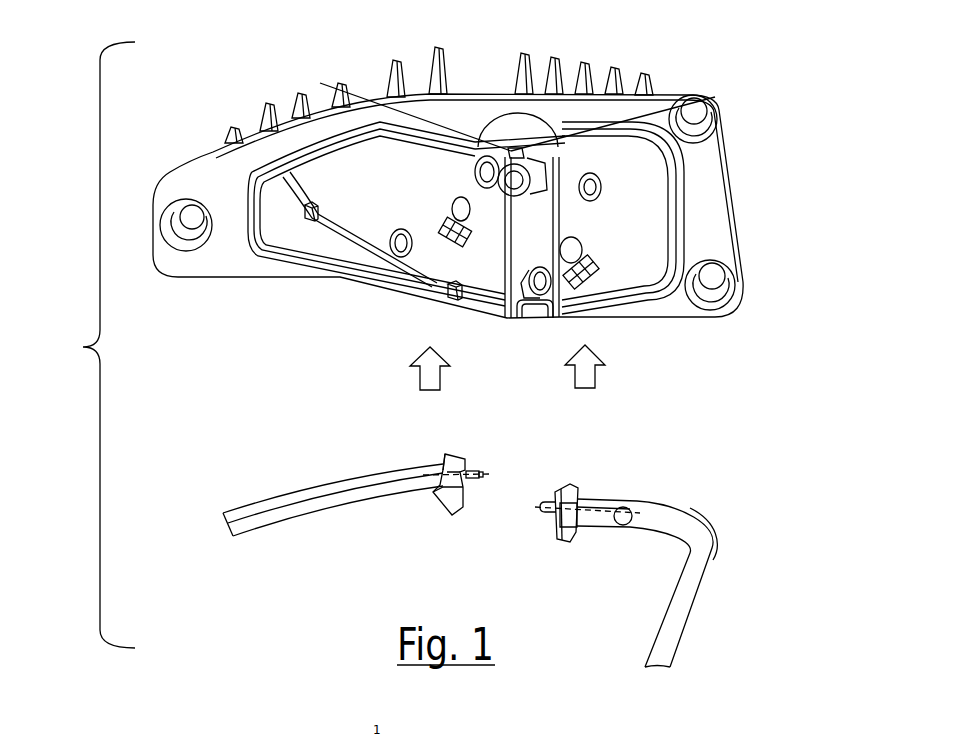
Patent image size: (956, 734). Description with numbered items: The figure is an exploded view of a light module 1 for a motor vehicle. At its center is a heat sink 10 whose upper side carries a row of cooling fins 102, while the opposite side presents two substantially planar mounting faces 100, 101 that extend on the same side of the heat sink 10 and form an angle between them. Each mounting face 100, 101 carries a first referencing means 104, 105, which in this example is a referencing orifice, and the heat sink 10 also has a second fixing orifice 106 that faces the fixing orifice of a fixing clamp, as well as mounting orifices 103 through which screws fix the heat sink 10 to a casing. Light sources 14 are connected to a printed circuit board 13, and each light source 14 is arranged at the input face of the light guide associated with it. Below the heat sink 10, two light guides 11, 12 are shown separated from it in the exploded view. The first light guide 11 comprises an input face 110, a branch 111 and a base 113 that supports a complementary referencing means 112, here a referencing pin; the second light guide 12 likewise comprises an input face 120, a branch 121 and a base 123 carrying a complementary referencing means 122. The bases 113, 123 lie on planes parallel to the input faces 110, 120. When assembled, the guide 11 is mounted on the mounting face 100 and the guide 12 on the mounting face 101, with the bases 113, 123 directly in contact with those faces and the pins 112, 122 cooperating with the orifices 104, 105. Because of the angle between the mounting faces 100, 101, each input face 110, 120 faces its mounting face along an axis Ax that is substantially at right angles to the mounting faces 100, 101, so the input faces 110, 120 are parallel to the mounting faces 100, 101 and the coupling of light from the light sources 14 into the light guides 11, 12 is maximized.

The light module 1 is at (83, 347).
The heat sink 10 is at (262, 80).
The mounting face 100 is at (360, 203).
The mounting face 101 is at (640, 209).
The cooling fins 102 is at (645, 73).
The mounting orifices 103 is at (695, 113).
The first referencing means 104 is at (458, 199).
The first referencing means 105 is at (582, 246).
The second fixing orifice 106 is at (518, 180).
The light guide 11 is at (352, 476).
The input face 110 is at (450, 503).
The branch 111 is at (272, 508).
The complementary referencing means 112 is at (473, 468).
The base 113 is at (437, 497).
The light guide 12 is at (638, 539).
The input face 120 is at (558, 523).
The branch 121 is at (707, 533).
The complementary referencing means 122 is at (553, 495).
The base 123 is at (562, 541).
The printed circuit board 13 is at (440, 236).
The light sources 14 is at (464, 243).
The axis Ax is at (514, 471).